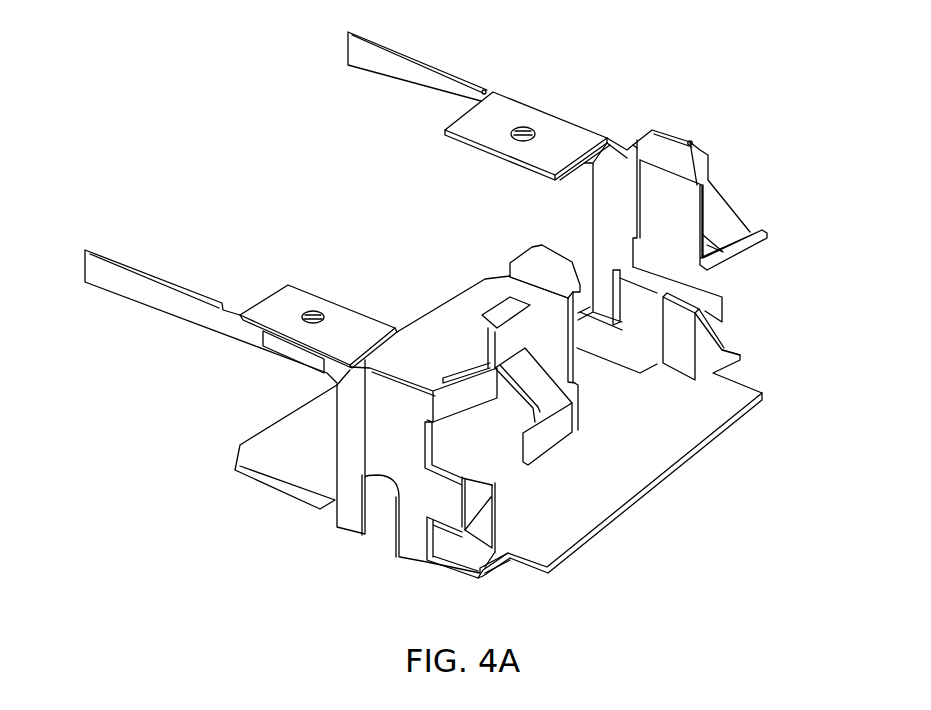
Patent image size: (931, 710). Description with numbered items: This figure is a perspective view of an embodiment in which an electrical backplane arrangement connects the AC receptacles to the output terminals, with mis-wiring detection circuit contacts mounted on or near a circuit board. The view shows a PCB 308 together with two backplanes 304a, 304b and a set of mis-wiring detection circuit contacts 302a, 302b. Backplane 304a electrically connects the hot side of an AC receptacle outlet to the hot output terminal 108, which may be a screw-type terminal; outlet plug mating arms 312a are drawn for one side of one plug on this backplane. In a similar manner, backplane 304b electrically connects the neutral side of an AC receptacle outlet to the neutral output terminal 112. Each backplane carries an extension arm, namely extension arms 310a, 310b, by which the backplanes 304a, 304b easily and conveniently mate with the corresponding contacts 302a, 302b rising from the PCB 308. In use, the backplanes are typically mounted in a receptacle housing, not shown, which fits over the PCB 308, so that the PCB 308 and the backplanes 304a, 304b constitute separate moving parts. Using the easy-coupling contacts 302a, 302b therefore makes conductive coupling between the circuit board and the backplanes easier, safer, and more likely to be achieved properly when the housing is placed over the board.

The neutral output terminal 112 is at (527, 128).
The hot output terminal 108 is at (320, 318).
The backplane 304a is at (350, 512).
The backplane 304b is at (613, 196).
The PCB 308 is at (612, 522).
The extension arm 310a is at (447, 502).
The extension arm 310b is at (730, 302).
The mis-wiring detection circuit contact 302a is at (483, 543).
The mis-wiring detection circuit contact 302b is at (722, 338).
The outlet plug mating arms 312a is at (500, 300).